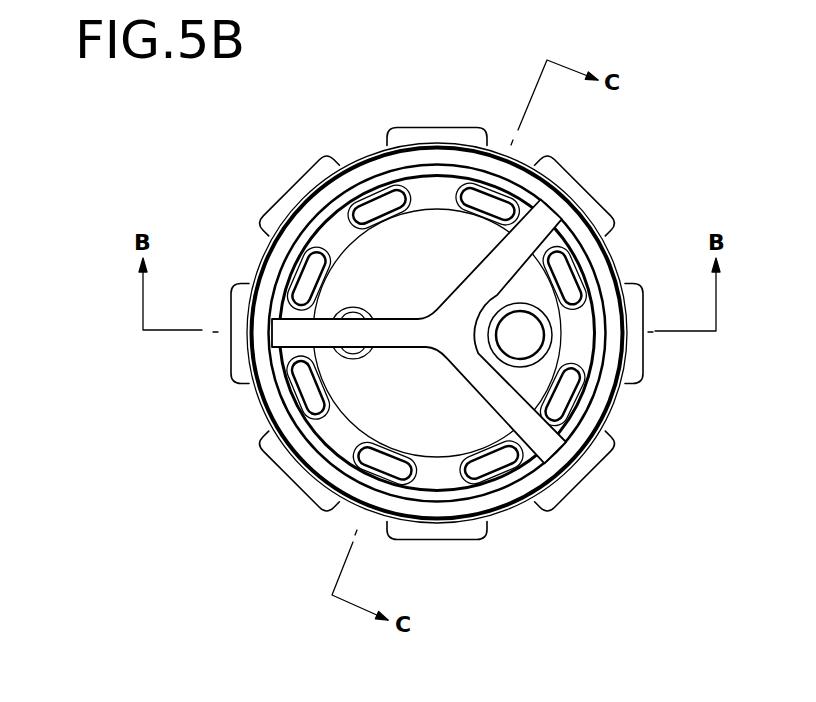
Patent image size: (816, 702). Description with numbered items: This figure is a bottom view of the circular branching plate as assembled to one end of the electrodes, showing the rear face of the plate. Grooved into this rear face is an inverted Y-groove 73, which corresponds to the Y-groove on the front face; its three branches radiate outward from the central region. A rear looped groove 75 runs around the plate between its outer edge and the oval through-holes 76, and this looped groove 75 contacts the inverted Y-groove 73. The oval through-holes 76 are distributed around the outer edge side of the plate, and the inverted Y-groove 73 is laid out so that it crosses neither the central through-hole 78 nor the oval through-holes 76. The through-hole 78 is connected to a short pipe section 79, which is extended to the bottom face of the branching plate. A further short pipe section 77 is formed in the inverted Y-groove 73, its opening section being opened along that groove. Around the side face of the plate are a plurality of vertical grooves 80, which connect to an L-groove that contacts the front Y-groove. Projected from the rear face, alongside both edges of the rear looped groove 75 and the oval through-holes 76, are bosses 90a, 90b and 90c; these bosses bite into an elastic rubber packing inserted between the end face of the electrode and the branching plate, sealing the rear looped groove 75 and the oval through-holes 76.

The inverted Y-groove 73 is at (405, 312).
The rear looped groove 75 is at (290, 228).
The oval through-holes 76 is at (285, 387).
The short pipe section 77 is at (350, 306).
The through-hole 78 is at (560, 370).
The short pipe section 79 is at (497, 348).
The vertical grooves 80 is at (345, 152).
The boss 90a is at (408, 130).
The boss 90b is at (573, 237).
The boss 90c is at (347, 423).